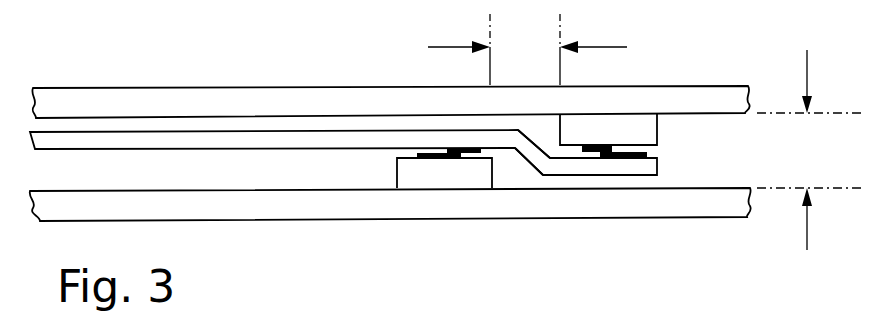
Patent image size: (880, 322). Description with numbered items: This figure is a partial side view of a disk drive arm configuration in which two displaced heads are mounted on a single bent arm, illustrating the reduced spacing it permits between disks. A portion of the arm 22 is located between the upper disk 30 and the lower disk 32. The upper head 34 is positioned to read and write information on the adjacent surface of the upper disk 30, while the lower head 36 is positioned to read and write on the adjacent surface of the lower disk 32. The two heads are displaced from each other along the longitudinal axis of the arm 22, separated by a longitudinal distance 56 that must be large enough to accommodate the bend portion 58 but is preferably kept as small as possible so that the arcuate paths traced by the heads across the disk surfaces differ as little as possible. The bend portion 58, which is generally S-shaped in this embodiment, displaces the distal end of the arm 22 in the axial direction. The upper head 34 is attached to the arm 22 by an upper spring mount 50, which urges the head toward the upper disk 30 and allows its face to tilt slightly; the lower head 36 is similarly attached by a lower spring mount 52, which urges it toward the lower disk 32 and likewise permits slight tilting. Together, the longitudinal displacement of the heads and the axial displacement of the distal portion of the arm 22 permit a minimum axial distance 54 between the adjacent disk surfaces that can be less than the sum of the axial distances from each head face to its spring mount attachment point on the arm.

The arm 22 is at (116, 149).
The upper disk 30 is at (182, 88).
The lower disk 32 is at (153, 220).
The upper head 34 is at (658, 133).
The lower head 36 is at (394, 176).
The upper spring mount 50 is at (598, 153).
The lower spring mount 52 is at (466, 157).
The minimum axial distance 54 is at (810, 150).
The longitudinal distance 56 is at (527, 49).
The bend portion 58 is at (529, 163).